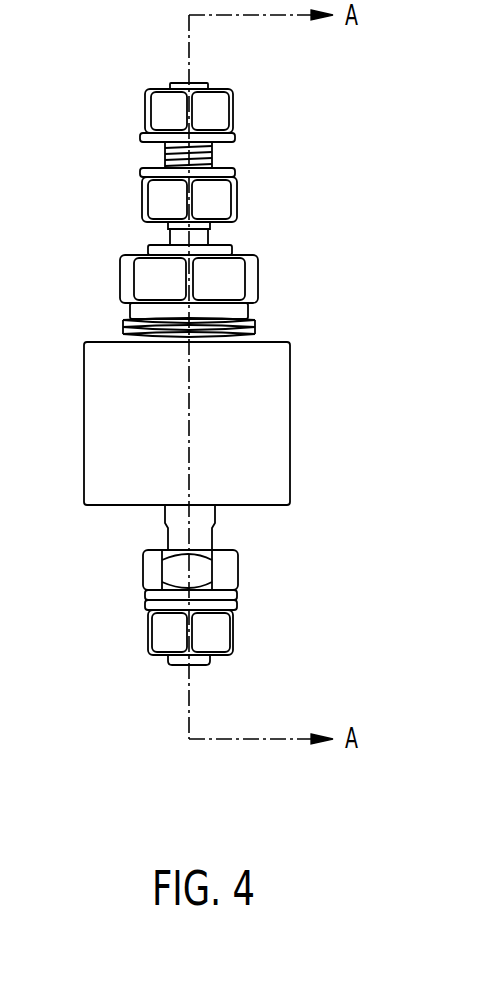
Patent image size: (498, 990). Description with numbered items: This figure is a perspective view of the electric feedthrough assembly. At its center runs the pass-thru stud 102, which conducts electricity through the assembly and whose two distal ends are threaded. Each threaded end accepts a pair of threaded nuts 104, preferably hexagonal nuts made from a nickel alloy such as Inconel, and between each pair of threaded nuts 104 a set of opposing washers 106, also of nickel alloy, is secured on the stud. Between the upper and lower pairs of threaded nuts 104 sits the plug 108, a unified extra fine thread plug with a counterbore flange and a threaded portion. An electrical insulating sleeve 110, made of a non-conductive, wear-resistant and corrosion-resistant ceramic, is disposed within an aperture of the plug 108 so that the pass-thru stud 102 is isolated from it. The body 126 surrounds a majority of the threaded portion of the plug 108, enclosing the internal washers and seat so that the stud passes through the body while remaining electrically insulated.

The pass-thru stud 102 is at (210, 530).
The threaded nuts 104 is at (233, 110).
The washers 106 is at (140, 137).
The plug 108 is at (120, 278).
The electrical insulating sleeve 110 is at (232, 250).
The body 126 is at (291, 421).